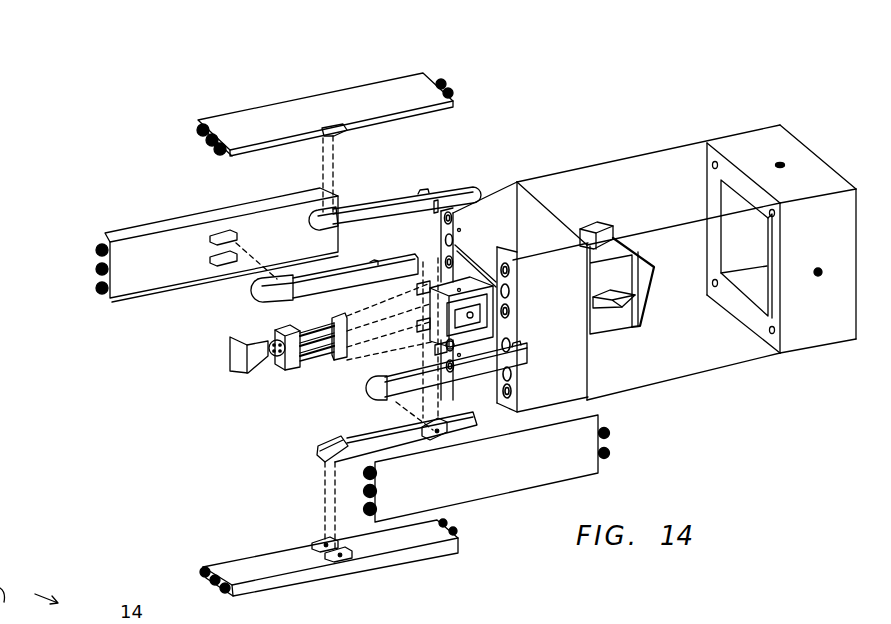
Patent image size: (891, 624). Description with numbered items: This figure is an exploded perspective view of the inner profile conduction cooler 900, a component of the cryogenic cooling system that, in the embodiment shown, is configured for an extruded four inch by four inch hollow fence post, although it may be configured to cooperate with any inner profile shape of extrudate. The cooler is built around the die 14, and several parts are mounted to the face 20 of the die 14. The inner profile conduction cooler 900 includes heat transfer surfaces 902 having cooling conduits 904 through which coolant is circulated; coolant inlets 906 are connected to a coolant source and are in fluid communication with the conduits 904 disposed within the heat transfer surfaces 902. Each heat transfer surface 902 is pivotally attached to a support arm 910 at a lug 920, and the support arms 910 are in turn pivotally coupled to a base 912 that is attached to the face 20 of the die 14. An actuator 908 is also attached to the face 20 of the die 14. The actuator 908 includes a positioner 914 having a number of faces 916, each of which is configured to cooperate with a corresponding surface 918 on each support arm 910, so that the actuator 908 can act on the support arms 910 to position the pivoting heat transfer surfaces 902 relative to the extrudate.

The inner profile conduction cooler 900 is at (670, 76).
The die 14 is at (514, 180).
The face 20 is at (478, 248).
The heat transfer surfaces 902 is at (332, 102).
The cooling conduits 904 is at (198, 130).
The coolant inlets 906 is at (597, 228).
The actuator 908 is at (214, 368).
The support arms 910 is at (386, 196).
The base 912 is at (499, 293).
The positioner 914 is at (274, 336).
The faces 916 is at (250, 338).
The surface 918 is at (340, 226).
The lug 920 is at (341, 128).